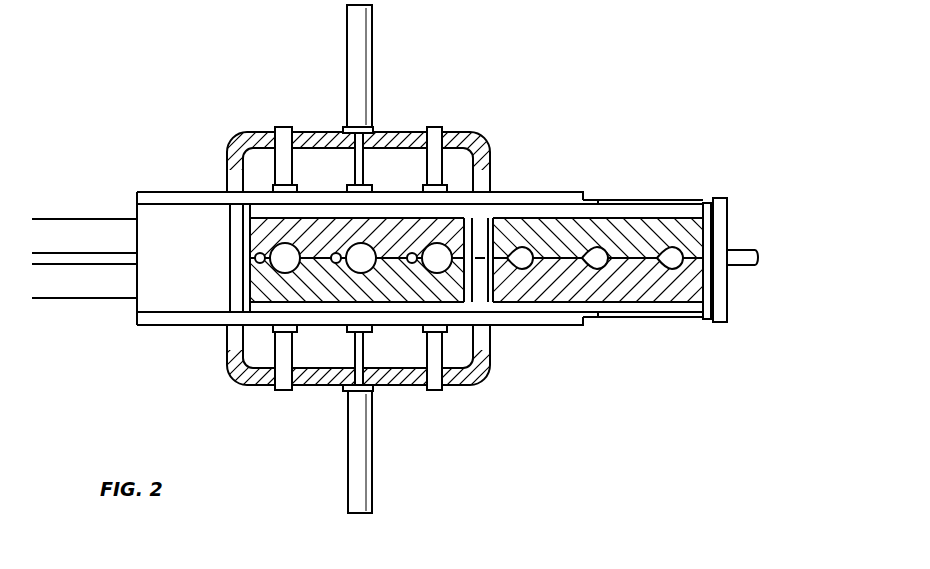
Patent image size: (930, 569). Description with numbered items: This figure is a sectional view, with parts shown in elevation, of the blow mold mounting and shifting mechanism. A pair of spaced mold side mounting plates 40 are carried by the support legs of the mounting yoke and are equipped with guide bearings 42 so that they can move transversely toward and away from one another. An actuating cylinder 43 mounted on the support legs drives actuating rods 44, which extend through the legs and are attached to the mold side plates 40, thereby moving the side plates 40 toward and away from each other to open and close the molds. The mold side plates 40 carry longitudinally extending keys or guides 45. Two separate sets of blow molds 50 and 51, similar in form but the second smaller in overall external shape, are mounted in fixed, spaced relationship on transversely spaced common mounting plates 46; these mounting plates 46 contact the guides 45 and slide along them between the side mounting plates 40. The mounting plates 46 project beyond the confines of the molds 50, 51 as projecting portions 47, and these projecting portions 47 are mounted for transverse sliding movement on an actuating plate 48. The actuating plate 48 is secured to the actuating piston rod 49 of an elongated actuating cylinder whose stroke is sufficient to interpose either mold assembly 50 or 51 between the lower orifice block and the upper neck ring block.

The mold side mounting plates 40 is at (564, 196).
The guide bearings 42 is at (282, 127).
The actuating cylinder 43 is at (372, 41).
The actuating rods 44 is at (352, 160).
The keys or guides 45 is at (683, 203).
The mounting plates 46 is at (658, 207).
The projecting portions 47 is at (708, 212).
The actuating plate 48 is at (728, 203).
The actuating piston rod 49 is at (752, 251).
The blow mold 50 is at (630, 232).
The blow mold 51 is at (443, 230).